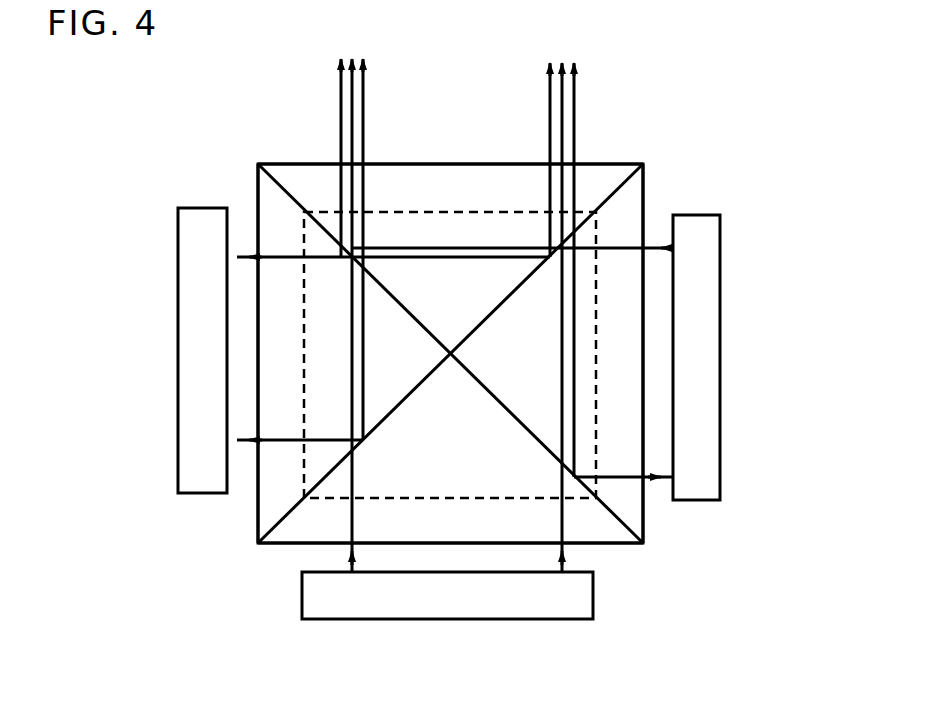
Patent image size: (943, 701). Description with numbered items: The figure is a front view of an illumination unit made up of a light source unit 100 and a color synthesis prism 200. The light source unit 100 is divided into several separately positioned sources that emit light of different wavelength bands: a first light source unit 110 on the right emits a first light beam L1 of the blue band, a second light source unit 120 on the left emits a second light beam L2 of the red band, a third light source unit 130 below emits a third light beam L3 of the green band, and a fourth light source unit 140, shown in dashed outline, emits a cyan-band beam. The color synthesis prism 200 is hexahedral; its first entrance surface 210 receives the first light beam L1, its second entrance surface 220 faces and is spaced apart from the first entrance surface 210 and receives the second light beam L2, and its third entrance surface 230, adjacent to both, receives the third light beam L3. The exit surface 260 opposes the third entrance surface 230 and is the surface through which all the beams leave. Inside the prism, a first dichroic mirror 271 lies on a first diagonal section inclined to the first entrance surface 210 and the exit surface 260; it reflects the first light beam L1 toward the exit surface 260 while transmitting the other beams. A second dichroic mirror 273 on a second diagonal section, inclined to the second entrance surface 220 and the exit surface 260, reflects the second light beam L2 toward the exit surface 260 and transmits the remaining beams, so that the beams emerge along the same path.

The light source unit 100 is at (746, 235).
The first light source unit 110 is at (705, 485).
The second light source unit 120 is at (190, 477).
The third light source unit 130 is at (583, 597).
The fourth light source unit 140 is at (597, 492).
The color synthesis prism 200 is at (652, 150).
The first entrance surface 210 is at (645, 418).
The second entrance surface 220 is at (257, 277).
The third entrance surface 230 is at (277, 542).
The exit surface 260 is at (412, 165).
The first dichroic mirror 271 is at (283, 174).
The second dichroic mirror 273 is at (624, 172).
The first light beam L1 is at (627, 252).
The second light beam L2 is at (243, 442).
The third light beam L3 is at (348, 560).